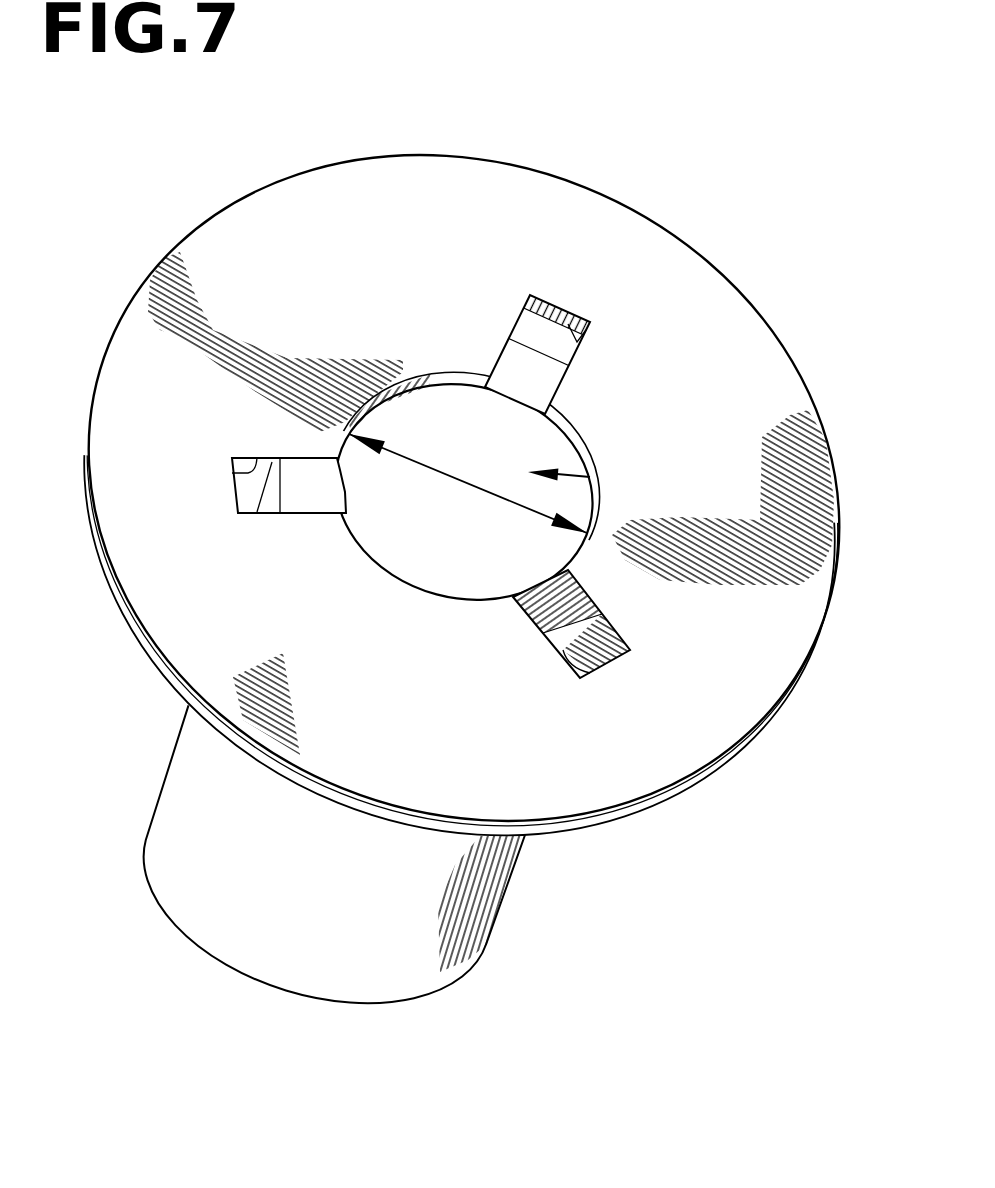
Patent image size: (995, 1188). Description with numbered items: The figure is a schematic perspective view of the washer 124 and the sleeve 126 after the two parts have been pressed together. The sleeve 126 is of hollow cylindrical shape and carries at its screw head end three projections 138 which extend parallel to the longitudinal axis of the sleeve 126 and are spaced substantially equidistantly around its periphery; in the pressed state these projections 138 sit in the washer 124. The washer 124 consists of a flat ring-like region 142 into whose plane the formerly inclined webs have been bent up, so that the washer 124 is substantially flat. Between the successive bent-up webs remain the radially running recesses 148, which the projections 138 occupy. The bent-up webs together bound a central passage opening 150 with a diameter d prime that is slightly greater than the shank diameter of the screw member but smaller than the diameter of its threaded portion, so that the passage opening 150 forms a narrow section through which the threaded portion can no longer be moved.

The washer 124 is at (760, 318).
The sleeve 126 is at (182, 767).
The projections 138 is at (517, 353).
The flat ring-like region 142 is at (803, 392).
The recess 148 is at (565, 313).
The passage opening 150 is at (590, 477).